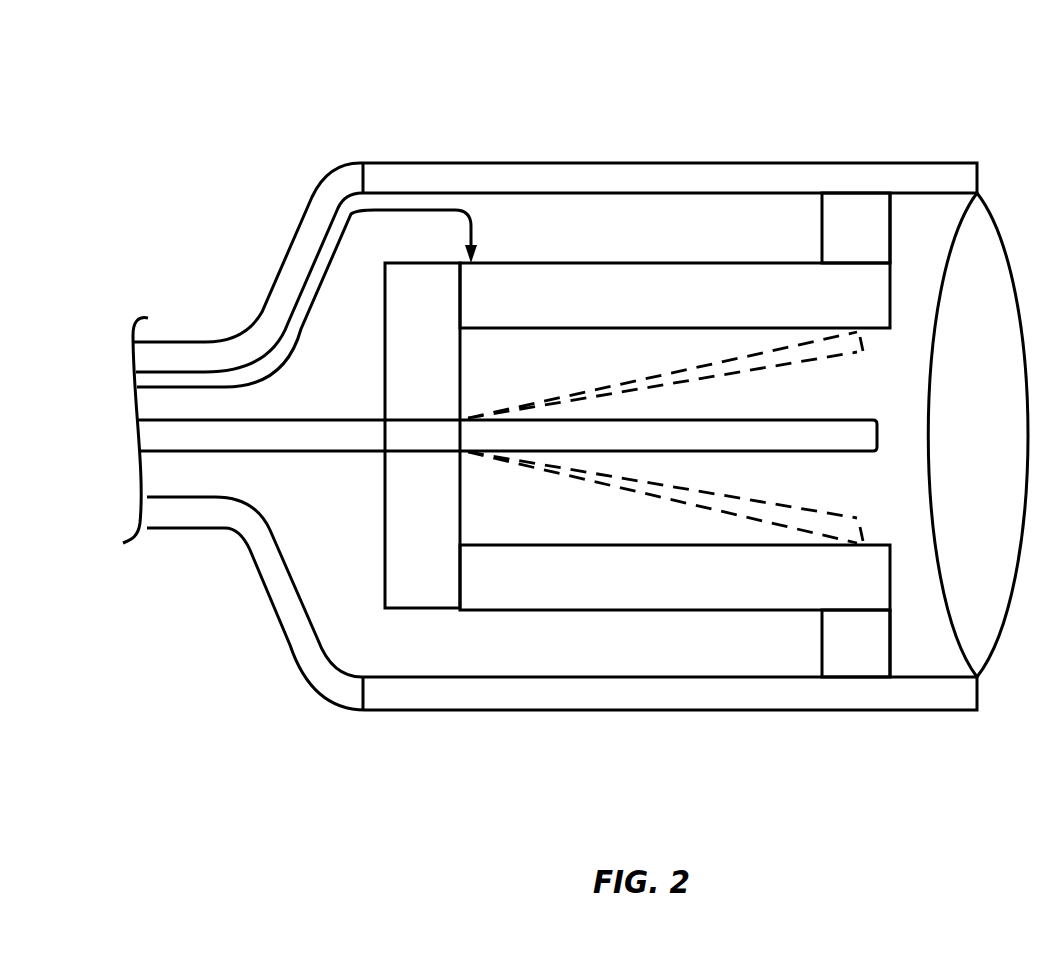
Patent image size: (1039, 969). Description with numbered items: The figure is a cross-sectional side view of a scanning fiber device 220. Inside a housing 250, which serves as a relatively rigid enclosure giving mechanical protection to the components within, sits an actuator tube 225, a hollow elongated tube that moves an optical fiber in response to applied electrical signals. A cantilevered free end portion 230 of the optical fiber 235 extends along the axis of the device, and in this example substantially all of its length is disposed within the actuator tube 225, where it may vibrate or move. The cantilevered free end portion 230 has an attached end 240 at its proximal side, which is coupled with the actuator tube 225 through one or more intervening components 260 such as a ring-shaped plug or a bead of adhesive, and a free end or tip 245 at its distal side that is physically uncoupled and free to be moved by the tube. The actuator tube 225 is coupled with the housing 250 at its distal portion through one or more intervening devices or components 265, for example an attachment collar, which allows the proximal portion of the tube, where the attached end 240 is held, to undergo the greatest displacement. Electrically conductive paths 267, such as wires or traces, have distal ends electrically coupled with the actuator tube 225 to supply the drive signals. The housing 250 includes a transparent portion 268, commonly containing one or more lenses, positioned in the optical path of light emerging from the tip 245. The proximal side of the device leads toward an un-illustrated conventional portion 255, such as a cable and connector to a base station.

The scanning fiber device 220 is at (203, 109).
The actuator tube 225 is at (643, 587).
The cantilevered free end portion 230 is at (680, 420).
The optical fiber 235 is at (273, 453).
The attached end 240 is at (480, 479).
The free end or tip 245 is at (878, 428).
The housing 250 is at (453, 745).
The conventional portion 255 is at (131, 332).
The intervening components 260 is at (440, 382).
The intervening devices or components 265 is at (822, 227).
The electrically conductive paths 267 is at (297, 357).
The transparent portion 268 is at (1005, 456).